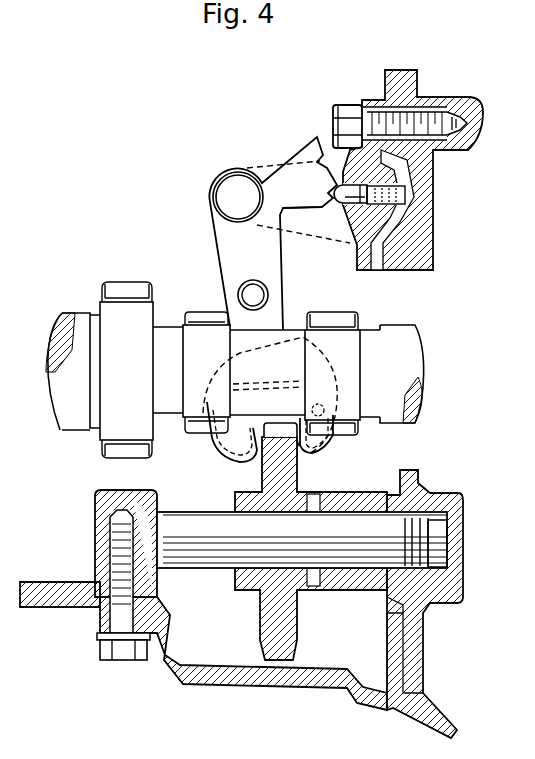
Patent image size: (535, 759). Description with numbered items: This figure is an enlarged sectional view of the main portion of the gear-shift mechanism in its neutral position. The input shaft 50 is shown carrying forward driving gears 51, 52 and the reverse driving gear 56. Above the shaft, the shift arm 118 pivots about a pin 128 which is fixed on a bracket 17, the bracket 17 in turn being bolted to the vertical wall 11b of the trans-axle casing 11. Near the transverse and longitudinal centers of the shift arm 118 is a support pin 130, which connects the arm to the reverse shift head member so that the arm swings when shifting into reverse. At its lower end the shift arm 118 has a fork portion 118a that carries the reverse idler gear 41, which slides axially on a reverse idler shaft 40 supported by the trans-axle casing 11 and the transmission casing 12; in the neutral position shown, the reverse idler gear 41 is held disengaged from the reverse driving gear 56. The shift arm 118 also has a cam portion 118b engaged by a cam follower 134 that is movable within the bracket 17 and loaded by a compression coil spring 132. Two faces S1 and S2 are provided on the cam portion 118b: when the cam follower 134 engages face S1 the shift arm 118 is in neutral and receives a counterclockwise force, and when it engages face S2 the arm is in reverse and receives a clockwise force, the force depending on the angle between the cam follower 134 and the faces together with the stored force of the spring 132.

The trans-axle casing 11 is at (437, 717).
The vertical wall 11b is at (416, 253).
The transmission casing 12 is at (57, 603).
The bracket 17 is at (362, 100).
The reverse idler shaft 40 is at (337, 540).
The reverse idler gear 41 is at (283, 472).
The input shaft 50 is at (408, 348).
The forward driving gear 51 is at (330, 322).
The forward driving gear 52 is at (120, 292).
The reverse driving gear 56 is at (192, 428).
The shift arm 118 is at (243, 233).
The fork portion 118a is at (322, 447).
The cam portion 118b is at (322, 197).
The pin 128 is at (225, 207).
The support pin 130 is at (240, 295).
The compression coil spring 132 is at (406, 191).
The cam follower 134 is at (334, 206).
The face S1 is at (333, 188).
The face S2 is at (294, 178).